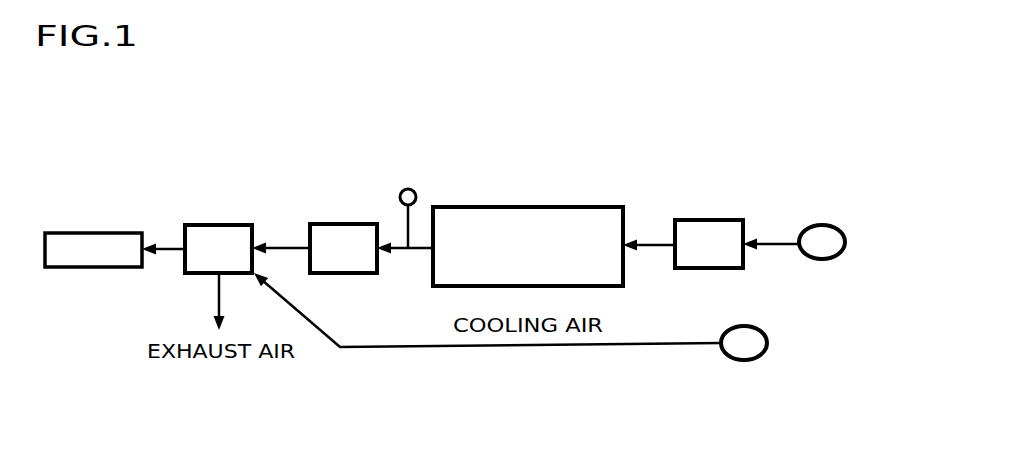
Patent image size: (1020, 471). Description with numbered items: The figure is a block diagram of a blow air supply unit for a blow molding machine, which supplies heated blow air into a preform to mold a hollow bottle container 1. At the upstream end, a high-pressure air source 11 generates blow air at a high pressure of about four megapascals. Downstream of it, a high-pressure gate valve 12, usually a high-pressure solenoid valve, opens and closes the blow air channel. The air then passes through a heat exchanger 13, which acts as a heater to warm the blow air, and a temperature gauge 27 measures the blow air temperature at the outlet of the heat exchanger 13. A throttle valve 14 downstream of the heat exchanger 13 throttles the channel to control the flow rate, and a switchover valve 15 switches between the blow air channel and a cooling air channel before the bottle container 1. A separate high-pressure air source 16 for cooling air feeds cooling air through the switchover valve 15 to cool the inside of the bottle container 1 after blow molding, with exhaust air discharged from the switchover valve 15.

The hollow bottle container 1 is at (93, 267).
The high-pressure air source 11 is at (822, 225).
The high-pressure gate valve 12 is at (712, 220).
The heat exchanger 13 is at (527, 207).
The throttle valve 14 is at (345, 224).
The switchover valve 15 is at (218, 225).
The high-pressure air source for cooling air 16 is at (746, 360).
The temperature gauge 27 is at (412, 188).